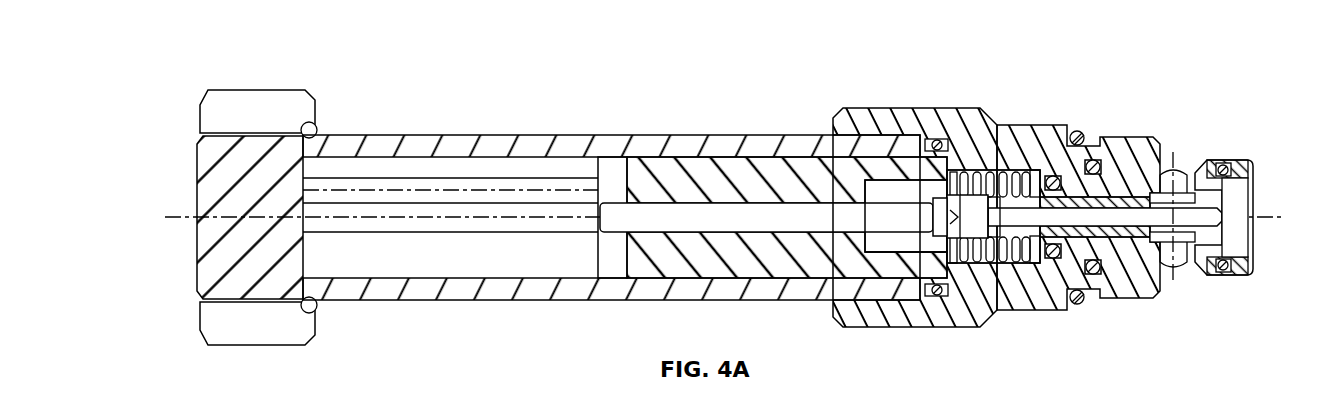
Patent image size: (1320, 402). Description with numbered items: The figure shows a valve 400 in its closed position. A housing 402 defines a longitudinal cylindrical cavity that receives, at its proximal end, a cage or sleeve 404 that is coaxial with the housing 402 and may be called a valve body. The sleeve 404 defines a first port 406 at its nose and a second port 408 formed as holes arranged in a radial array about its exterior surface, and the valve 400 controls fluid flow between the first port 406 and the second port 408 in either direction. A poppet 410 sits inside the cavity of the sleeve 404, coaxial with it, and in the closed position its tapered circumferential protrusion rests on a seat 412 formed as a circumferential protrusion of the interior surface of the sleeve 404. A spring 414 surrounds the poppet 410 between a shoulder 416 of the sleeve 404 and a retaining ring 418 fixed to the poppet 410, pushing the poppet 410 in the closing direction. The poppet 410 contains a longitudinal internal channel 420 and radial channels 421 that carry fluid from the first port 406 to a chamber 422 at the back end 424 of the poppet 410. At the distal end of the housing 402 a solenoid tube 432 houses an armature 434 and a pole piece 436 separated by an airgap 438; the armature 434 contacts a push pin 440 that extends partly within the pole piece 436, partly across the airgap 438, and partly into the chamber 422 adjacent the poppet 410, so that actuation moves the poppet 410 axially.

The valve 400 is at (245, 70).
The housing 402 is at (870, 120).
The sleeve 404 is at (1122, 178).
The first port 406 is at (1264, 215).
The second port 408 is at (1183, 159).
The poppet 410 is at (1138, 238).
The seat 412 is at (1196, 255).
The spring 414 is at (963, 168).
The shoulder 416 is at (1038, 175).
The retaining ring 418 is at (953, 162).
The longitudinal internal channel 420 is at (1052, 227).
The radial channels 421 is at (993, 231).
The chamber 422 is at (892, 258).
The back end 424 is at (930, 249).
The solenoid tube 432 is at (418, 147).
The armature 434 is at (470, 176).
The pole piece 436 is at (748, 160).
The airgap 438 is at (618, 162).
The push pin 440 is at (785, 210).